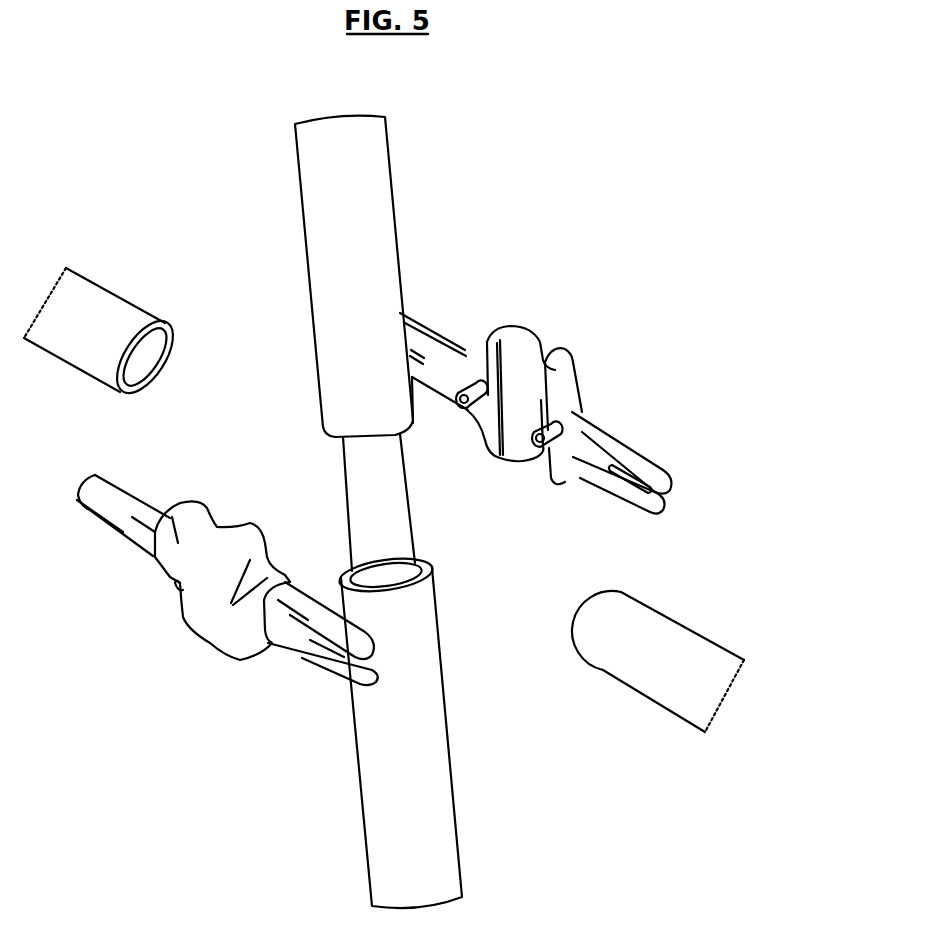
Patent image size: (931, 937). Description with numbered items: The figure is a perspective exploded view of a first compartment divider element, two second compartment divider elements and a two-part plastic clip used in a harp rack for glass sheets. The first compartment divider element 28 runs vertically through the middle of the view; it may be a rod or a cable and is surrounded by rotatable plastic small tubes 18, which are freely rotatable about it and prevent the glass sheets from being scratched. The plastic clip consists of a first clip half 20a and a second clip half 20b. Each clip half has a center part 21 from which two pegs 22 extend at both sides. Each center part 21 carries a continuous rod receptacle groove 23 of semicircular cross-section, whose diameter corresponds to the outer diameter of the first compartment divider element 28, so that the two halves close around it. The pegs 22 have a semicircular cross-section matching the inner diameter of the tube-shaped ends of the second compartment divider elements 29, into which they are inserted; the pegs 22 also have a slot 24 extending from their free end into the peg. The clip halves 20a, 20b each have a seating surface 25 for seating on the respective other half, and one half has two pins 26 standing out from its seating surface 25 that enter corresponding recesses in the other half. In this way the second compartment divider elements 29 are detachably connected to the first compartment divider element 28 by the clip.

The plastic small tube 18 is at (335, 150).
The first compartment divider element 28 is at (368, 500).
The second compartment divider element 29 is at (89, 333).
The first clip half 20a is at (560, 385).
The second clip half 20b is at (210, 575).
The center part 21 is at (197, 545).
The peg 22 is at (637, 465).
The rod receptacle groove 23 is at (516, 390).
The slot 24 is at (632, 474).
The seating surface 25 is at (588, 455).
The pin 26 is at (473, 388).